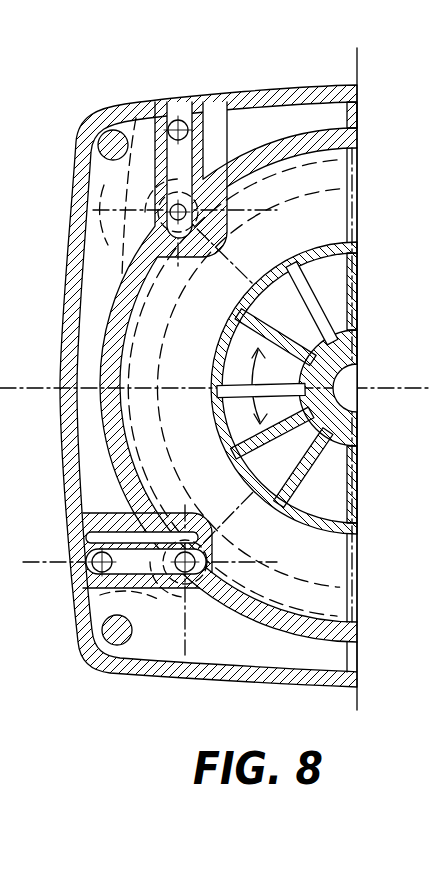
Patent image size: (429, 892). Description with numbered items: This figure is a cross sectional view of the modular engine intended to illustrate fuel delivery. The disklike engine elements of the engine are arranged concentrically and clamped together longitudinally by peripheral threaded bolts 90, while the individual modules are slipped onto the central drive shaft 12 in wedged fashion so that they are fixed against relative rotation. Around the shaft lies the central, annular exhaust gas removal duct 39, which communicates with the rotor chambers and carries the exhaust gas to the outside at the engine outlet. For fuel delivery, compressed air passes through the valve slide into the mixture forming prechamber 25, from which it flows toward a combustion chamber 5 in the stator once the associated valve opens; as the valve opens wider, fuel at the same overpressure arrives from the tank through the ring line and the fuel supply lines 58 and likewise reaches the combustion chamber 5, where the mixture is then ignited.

The combustion chamber 5 is at (112, 138).
The central drive shaft 12 is at (351, 379).
The mixture forming prechamber 25 is at (212, 135).
The exhaust gas removal duct 39 is at (337, 300).
The fuel supply line 58 is at (180, 128).
The peripheral threaded bolt 90 is at (103, 634).